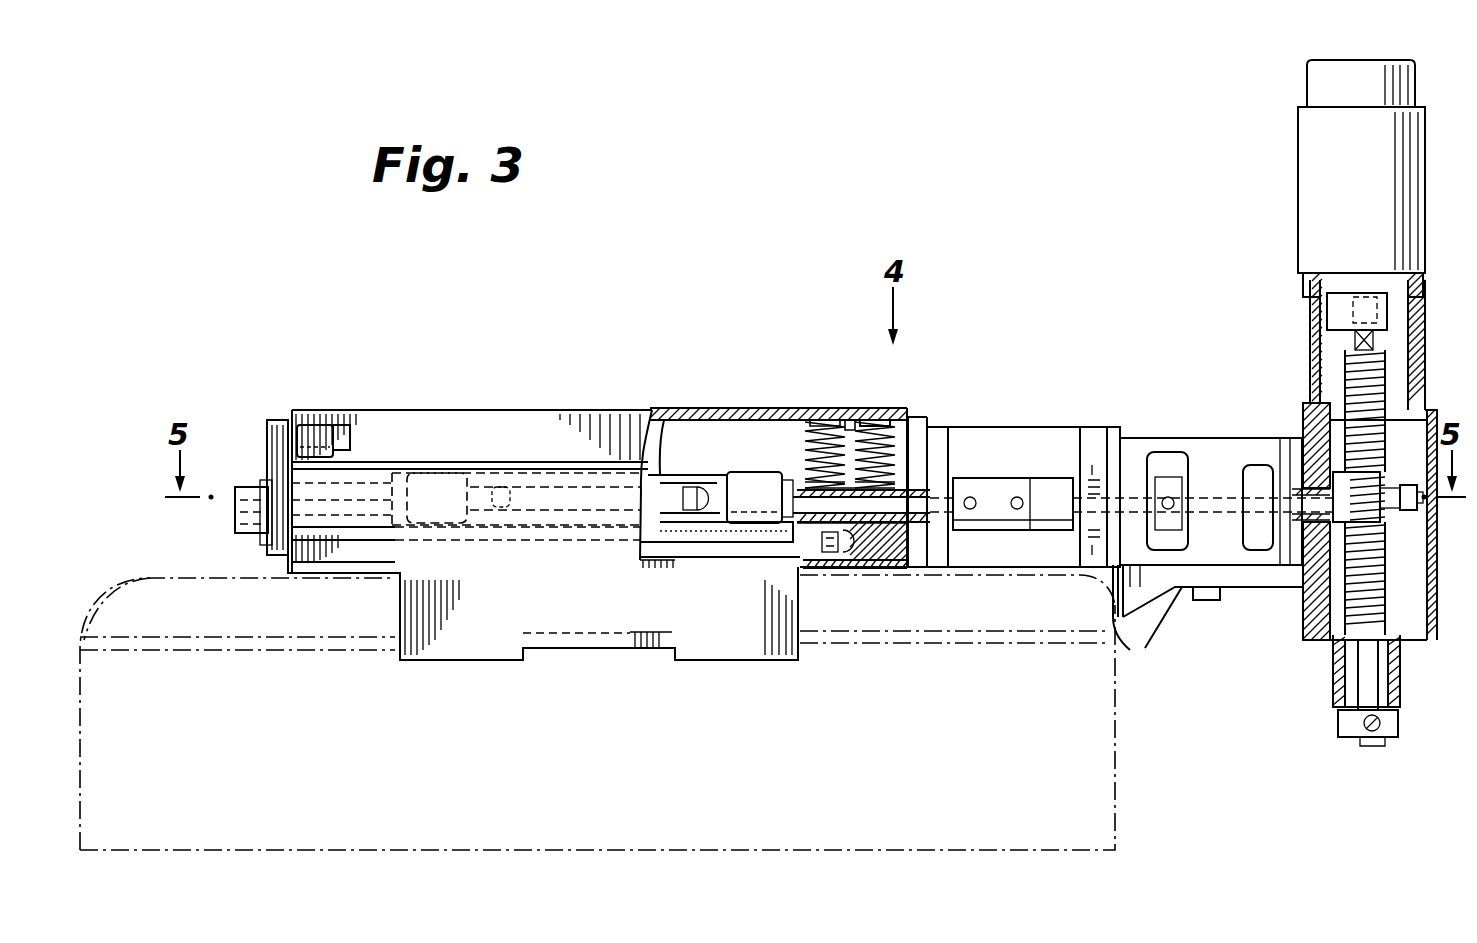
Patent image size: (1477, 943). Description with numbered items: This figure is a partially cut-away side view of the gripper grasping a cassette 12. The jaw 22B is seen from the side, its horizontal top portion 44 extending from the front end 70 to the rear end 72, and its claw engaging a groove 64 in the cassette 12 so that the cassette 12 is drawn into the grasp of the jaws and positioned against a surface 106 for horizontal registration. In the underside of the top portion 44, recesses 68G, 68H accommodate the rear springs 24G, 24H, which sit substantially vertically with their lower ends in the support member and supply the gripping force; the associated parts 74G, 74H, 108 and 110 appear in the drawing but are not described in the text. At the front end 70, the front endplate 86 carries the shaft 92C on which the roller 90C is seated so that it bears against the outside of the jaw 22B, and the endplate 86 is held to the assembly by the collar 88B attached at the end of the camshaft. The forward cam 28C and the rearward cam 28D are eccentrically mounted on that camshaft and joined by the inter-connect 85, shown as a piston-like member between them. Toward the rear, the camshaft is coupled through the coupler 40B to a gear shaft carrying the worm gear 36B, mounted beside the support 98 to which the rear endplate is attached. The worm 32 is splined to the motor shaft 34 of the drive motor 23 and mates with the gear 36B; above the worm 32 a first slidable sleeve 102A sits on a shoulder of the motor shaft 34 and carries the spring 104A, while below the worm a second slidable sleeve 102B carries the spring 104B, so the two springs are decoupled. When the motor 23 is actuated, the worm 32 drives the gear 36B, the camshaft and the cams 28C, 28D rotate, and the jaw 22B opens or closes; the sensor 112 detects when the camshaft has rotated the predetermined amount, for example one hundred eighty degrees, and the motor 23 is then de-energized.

The cassette 12 is at (1100, 800).
The jaw 22B is at (484, 662).
The drive motor 23 is at (1298, 206).
The spring 24G is at (828, 470).
The spring 24H is at (880, 450).
The forward cam 28C is at (440, 492).
The rearward cam 28D is at (748, 520).
The worm 32 is at (1350, 466).
The motor shaft 34 is at (1340, 640).
The worm gear 36B is at (1305, 540).
The coupler 40B is at (1018, 532).
The horizontal top portion 44 is at (753, 408).
The groove 64 is at (150, 605).
The recess 68G is at (810, 416).
The recess 68H is at (878, 430).
The front end 70 is at (295, 432).
The rear end 72 is at (905, 413).
The spring retainer 74G is at (804, 468).
The spring retainer 74H is at (880, 472).
The inter-connect 85 is at (656, 470).
The front endplate 86 is at (274, 420).
The collar 88B is at (240, 517).
The roller 90C is at (325, 428).
The shaft 92C is at (303, 445).
The support 98 is at (1170, 436).
The first slidable sleeve 102A is at (1330, 452).
The second slidable sleeve 102B is at (1318, 588).
The spring 104A is at (1348, 392).
The spring 104B is at (1342, 615).
The surface 106 is at (1117, 633).
The guide rail 108 is at (1120, 612).
The pin 110 is at (845, 555).
The sensor 112 is at (1097, 470).